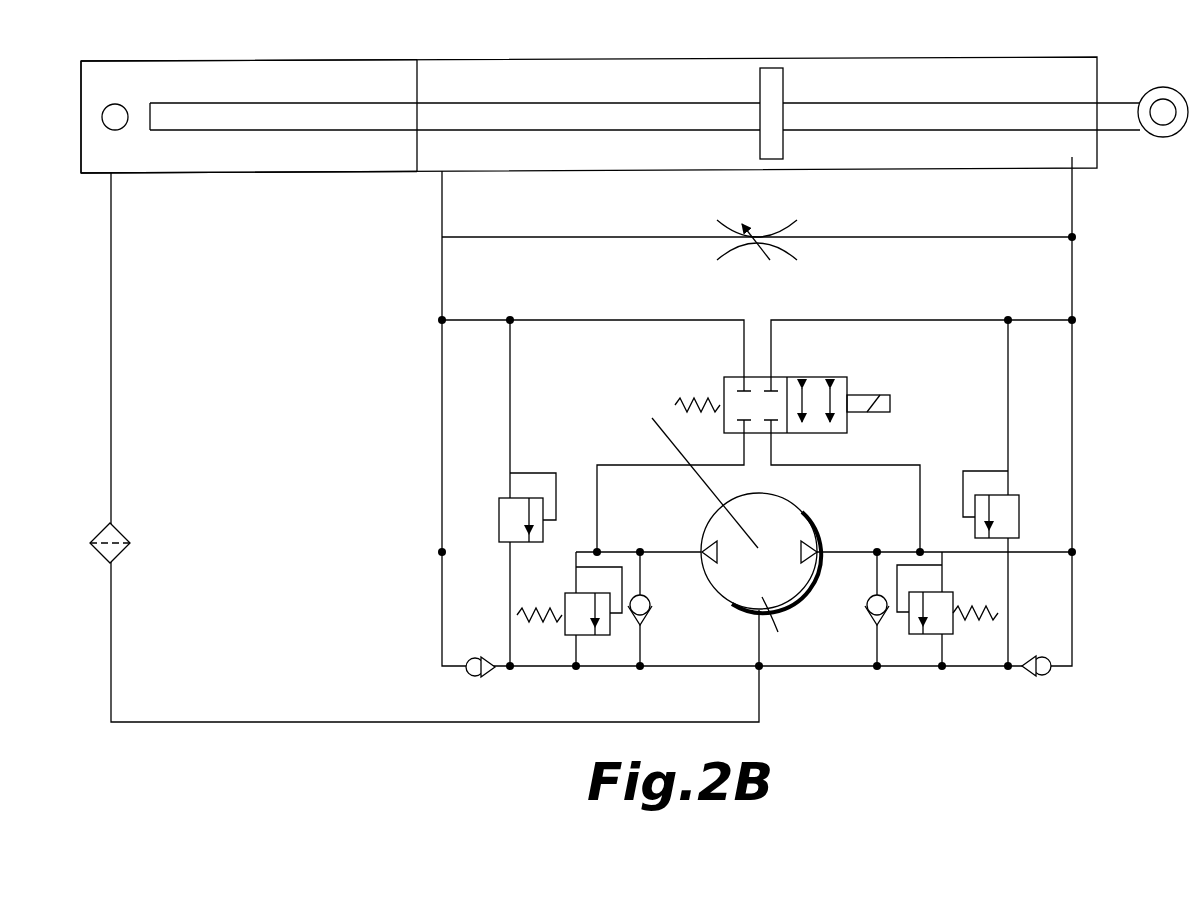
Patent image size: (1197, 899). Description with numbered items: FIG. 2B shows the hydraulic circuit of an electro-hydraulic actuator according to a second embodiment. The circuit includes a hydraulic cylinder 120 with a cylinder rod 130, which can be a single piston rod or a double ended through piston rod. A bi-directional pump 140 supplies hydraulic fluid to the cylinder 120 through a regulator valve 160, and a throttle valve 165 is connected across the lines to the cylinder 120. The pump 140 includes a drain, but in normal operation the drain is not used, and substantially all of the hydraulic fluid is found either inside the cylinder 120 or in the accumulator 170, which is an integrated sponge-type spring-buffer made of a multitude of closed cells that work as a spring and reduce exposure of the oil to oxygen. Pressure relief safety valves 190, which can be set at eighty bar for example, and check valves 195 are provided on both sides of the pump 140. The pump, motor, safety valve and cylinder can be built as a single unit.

The cylinder 120 is at (724, 62).
The cylinder rod 130 is at (1125, 125).
The pump 140 is at (808, 532).
The regulator valve 160 is at (847, 380).
The throttle valve 165 is at (765, 235).
The accumulator 170 is at (378, 60).
The relief (safety) valve 190 is at (512, 486).
The check valve 195 is at (470, 660).